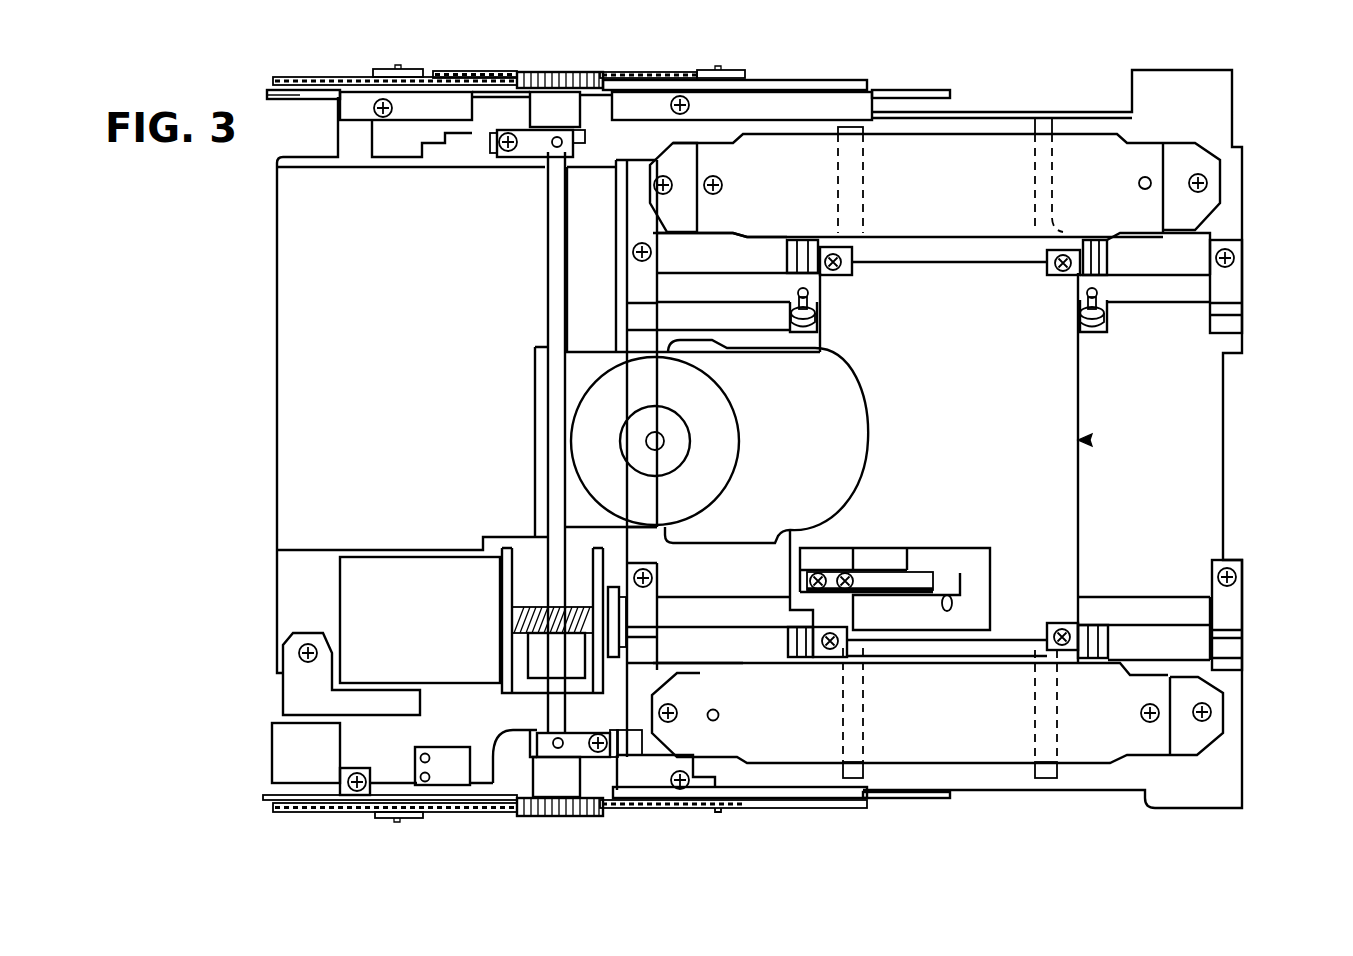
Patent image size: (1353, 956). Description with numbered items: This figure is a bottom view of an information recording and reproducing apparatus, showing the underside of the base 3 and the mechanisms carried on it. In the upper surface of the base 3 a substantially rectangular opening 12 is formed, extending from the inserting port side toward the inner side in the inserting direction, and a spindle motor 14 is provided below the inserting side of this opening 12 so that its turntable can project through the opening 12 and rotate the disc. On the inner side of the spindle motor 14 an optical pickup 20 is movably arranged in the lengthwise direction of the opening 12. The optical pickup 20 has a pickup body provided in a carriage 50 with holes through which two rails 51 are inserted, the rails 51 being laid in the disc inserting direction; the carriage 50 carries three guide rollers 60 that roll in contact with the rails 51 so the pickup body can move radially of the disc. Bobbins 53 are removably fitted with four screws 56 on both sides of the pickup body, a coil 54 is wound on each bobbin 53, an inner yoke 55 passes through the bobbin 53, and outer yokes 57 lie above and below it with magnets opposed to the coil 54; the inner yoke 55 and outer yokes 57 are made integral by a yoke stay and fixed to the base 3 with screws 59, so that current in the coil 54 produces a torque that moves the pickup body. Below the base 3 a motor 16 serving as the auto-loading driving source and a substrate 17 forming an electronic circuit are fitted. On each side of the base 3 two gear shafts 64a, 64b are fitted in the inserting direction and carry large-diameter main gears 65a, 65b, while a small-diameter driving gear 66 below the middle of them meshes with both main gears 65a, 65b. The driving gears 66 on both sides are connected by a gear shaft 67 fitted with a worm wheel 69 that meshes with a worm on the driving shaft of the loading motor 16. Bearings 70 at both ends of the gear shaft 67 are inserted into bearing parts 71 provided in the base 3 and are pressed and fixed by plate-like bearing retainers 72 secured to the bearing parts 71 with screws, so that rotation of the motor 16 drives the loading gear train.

The base 3 is at (1215, 440).
The opening 12 is at (792, 530).
The spindle motor 14 is at (575, 445).
The motor 16 is at (340, 605).
The substrate 17 is at (275, 385).
The optical pickup 20 is at (1090, 440).
The carriage 50 is at (1123, 468).
The rails 51 is at (1160, 290).
The bobbins 53 is at (1045, 128).
The coil 54 is at (992, 128).
The inner yoke 55 is at (1185, 142).
The screws 56 is at (840, 275).
The outer yokes 57 is at (1100, 143).
The screws 59 is at (653, 163).
The guide rollers 60 is at (807, 332).
The gear shaft 64a is at (405, 70).
The gear shaft 64b is at (725, 70).
The main gear 65a is at (295, 78).
The main gear 65b is at (840, 72).
The driving gear 66 is at (580, 60).
The gear shaft 67 is at (548, 267).
The worm wheel 69 is at (512, 610).
The bearings 70 is at (583, 143).
The bearing parts 71 is at (548, 158).
The bearing retainers 72 is at (523, 147).